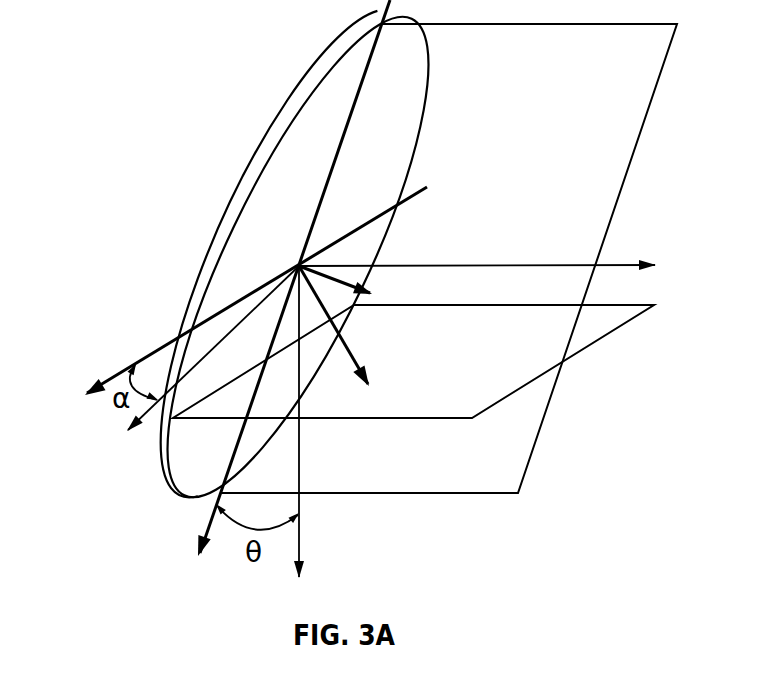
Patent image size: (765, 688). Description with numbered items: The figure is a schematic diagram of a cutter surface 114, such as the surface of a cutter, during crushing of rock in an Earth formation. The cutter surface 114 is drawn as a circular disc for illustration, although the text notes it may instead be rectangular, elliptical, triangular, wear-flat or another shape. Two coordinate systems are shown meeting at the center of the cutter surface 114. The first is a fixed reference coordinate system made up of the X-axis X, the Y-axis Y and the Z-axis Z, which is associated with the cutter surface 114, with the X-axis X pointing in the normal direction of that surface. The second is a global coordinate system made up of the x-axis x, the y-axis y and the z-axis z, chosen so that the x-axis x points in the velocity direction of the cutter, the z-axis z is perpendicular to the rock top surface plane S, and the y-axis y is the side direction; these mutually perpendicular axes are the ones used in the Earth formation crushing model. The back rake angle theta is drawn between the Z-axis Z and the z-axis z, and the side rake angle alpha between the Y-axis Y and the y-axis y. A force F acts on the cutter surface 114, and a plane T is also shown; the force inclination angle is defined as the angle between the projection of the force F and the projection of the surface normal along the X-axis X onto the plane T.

The cutter surface 114 is at (313, 63).
The plane T is at (449, 258).
The rock top surface plane S is at (413, 361).
The Z-axis Z is at (288, 296).
The Y-axis Y is at (246, 298).
The X-axis X is at (347, 287).
The force F is at (343, 339).
The x-axis x is at (488, 263).
The y-axis y is at (206, 363).
The z-axis z is at (300, 436).